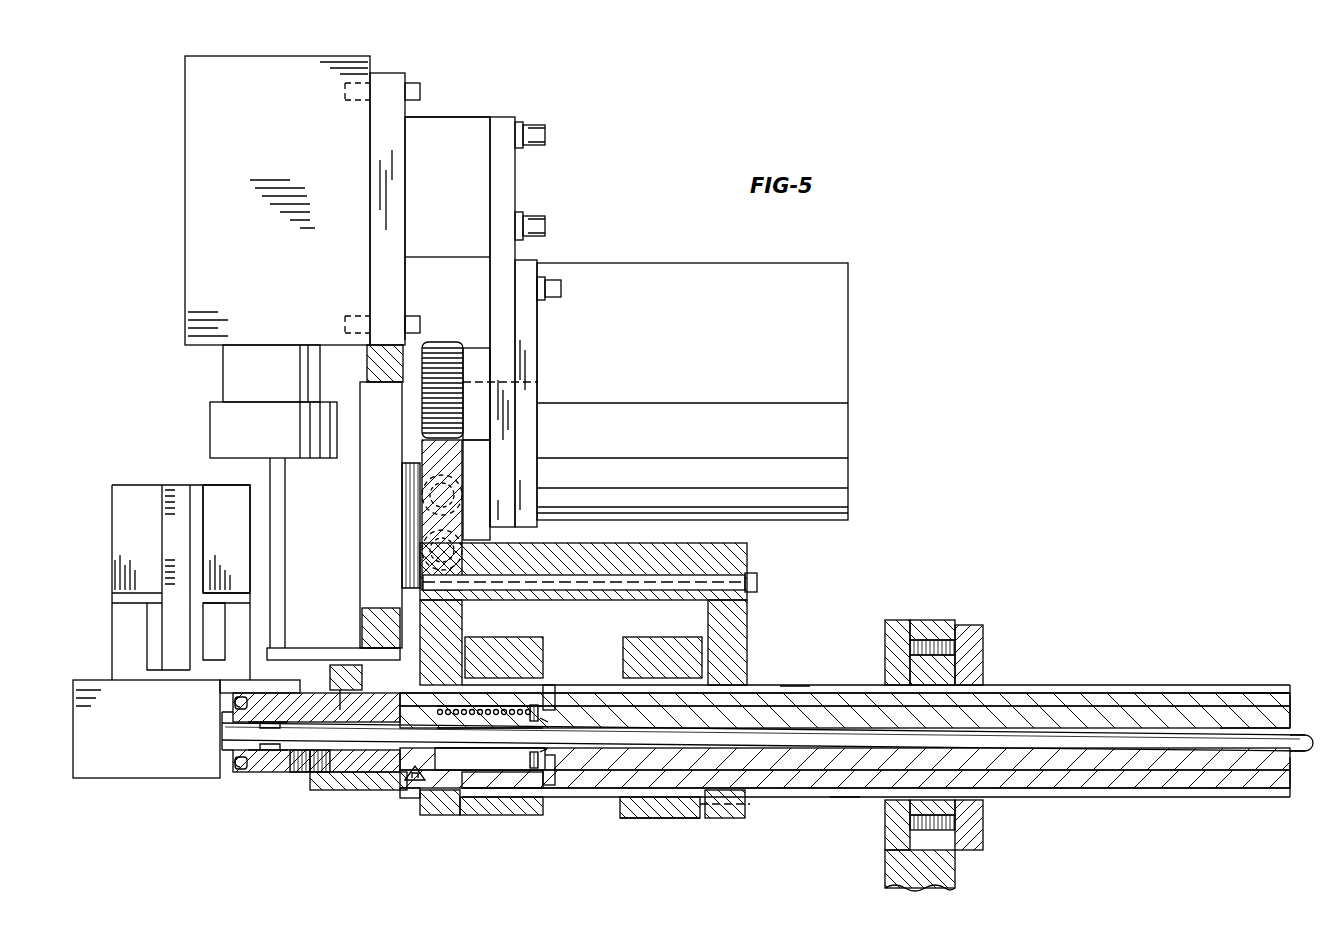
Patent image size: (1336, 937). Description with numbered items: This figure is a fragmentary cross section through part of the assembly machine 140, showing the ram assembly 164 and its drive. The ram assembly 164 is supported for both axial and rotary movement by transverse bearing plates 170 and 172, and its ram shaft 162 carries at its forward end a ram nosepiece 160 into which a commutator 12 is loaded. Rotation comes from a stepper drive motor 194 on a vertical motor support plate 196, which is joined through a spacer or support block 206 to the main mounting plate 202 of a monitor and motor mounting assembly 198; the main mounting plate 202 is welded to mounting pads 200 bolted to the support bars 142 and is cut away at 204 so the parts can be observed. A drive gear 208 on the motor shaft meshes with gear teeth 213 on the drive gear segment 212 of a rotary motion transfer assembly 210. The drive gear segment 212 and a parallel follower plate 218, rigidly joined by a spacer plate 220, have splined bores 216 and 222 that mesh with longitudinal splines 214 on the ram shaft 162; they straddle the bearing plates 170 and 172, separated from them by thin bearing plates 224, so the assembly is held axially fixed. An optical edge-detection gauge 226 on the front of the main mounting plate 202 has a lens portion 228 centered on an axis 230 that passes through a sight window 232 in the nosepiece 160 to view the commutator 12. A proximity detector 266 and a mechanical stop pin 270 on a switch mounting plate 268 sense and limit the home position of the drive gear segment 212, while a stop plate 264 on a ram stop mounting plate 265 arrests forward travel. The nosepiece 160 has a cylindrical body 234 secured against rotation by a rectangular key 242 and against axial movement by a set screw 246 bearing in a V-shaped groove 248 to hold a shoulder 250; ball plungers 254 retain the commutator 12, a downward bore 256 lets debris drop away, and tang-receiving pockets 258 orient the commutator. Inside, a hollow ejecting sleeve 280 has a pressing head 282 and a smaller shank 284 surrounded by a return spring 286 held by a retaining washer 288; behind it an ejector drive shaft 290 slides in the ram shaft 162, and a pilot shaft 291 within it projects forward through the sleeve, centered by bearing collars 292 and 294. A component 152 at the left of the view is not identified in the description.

The commutator 12 is at (150, 632).
The fiber drive assembly 140 is at (648, 183).
The support bar 142 is at (146, 729).
The clamp assembly 152 is at (130, 485).
The ram nosepiece 160 is at (250, 790).
The ram shaft 162 is at (1063, 700).
The ram assembly 164 is at (1135, 690).
The transverse bearing plate 170 is at (528, 816).
The transverse bearing plate 172 is at (648, 820).
The stepper drive motor 194 is at (690, 265).
The motor support plate 196 is at (515, 160).
The monitor and motor mounting assembly 198 is at (440, 100).
The mounting pad 200 is at (248, 665).
The main mounting plate 202 is at (370, 138).
The cut-away section 204 is at (360, 530).
The spacer or support block 206 is at (447, 322).
The drive gear 208 is at (447, 340).
The rotary motion transfer assembly 210 is at (757, 585).
The drive gear segment 212 is at (468, 456).
The gear teeth 213 is at (465, 430).
The splines 214 is at (803, 683).
The splined circular bore 216 is at (520, 795).
The follower plate 218 is at (745, 604).
The spacer plate 220 is at (657, 545).
The splined circular bore 222 is at (728, 802).
The thin bearing plate 224 is at (460, 816).
The optical edge-detection camera or gauge 226 is at (185, 185).
The lens portion 228 is at (210, 428).
The lens axis 230 is at (272, 490).
The camera sight window 232 is at (340, 688).
The cylindrical body 234 is at (385, 792).
The rectangular key 242 is at (388, 660).
The set screw 246 is at (415, 796).
The V-shaped circular groove 248 is at (420, 650).
The rearwardly facing shoulder 250 is at (412, 800).
The ball plunger 254 is at (250, 790).
The downwardly extending bore 256 is at (302, 792).
The tang-receiving pocket 258 is at (236, 778).
The stop plate 264 is at (968, 625).
The ram stop mounting plate 265 is at (920, 622).
The proximity detector 266 is at (425, 490).
The switch mounting plate 268 is at (478, 470).
The mechanical stop pin 270 is at (432, 522).
The commutator ejecting sleeve 280 is at (480, 712).
The pressing head 282 is at (322, 792).
The shank portion 284 is at (560, 790).
The ejecting sleeve return spring 286 is at (505, 712).
The retaining washer 288 is at (535, 712).
The ejector drive shaft 290 is at (1233, 712).
The pilot shaft 291 is at (1188, 735).
The bearing collar 292 is at (300, 690).
The bearing collar 294 is at (545, 722).